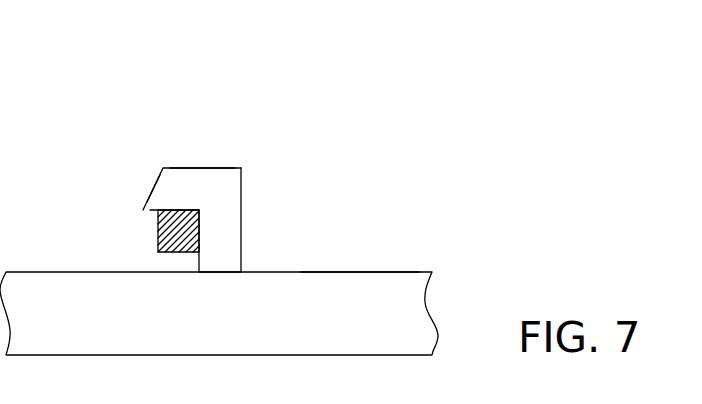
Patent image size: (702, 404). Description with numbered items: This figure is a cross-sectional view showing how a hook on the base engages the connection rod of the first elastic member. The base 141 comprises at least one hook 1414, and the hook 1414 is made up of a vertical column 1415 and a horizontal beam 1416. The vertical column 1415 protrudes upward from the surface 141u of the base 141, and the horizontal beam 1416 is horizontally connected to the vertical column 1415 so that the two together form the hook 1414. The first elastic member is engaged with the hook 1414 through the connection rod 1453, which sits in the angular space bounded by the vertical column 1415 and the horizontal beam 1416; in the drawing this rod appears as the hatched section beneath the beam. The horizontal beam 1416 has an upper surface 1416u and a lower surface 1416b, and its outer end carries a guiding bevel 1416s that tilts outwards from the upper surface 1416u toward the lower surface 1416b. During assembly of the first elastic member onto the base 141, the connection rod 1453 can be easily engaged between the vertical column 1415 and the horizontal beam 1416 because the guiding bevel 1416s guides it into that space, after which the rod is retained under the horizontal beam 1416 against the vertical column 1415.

The base 141 is at (293, 280).
The surface of the base 141u is at (377, 272).
The hook 1414 is at (305, 68).
The horizontal beam 1416 is at (193, 168).
The vertical column 1415 is at (228, 228).
The upper surface of the horizontal beam 1416u is at (220, 168).
The guiding bevel 1416s is at (151, 191).
The lower surface of the horizontal beam 1416b is at (160, 221).
The connection rod 1453 is at (158, 240).